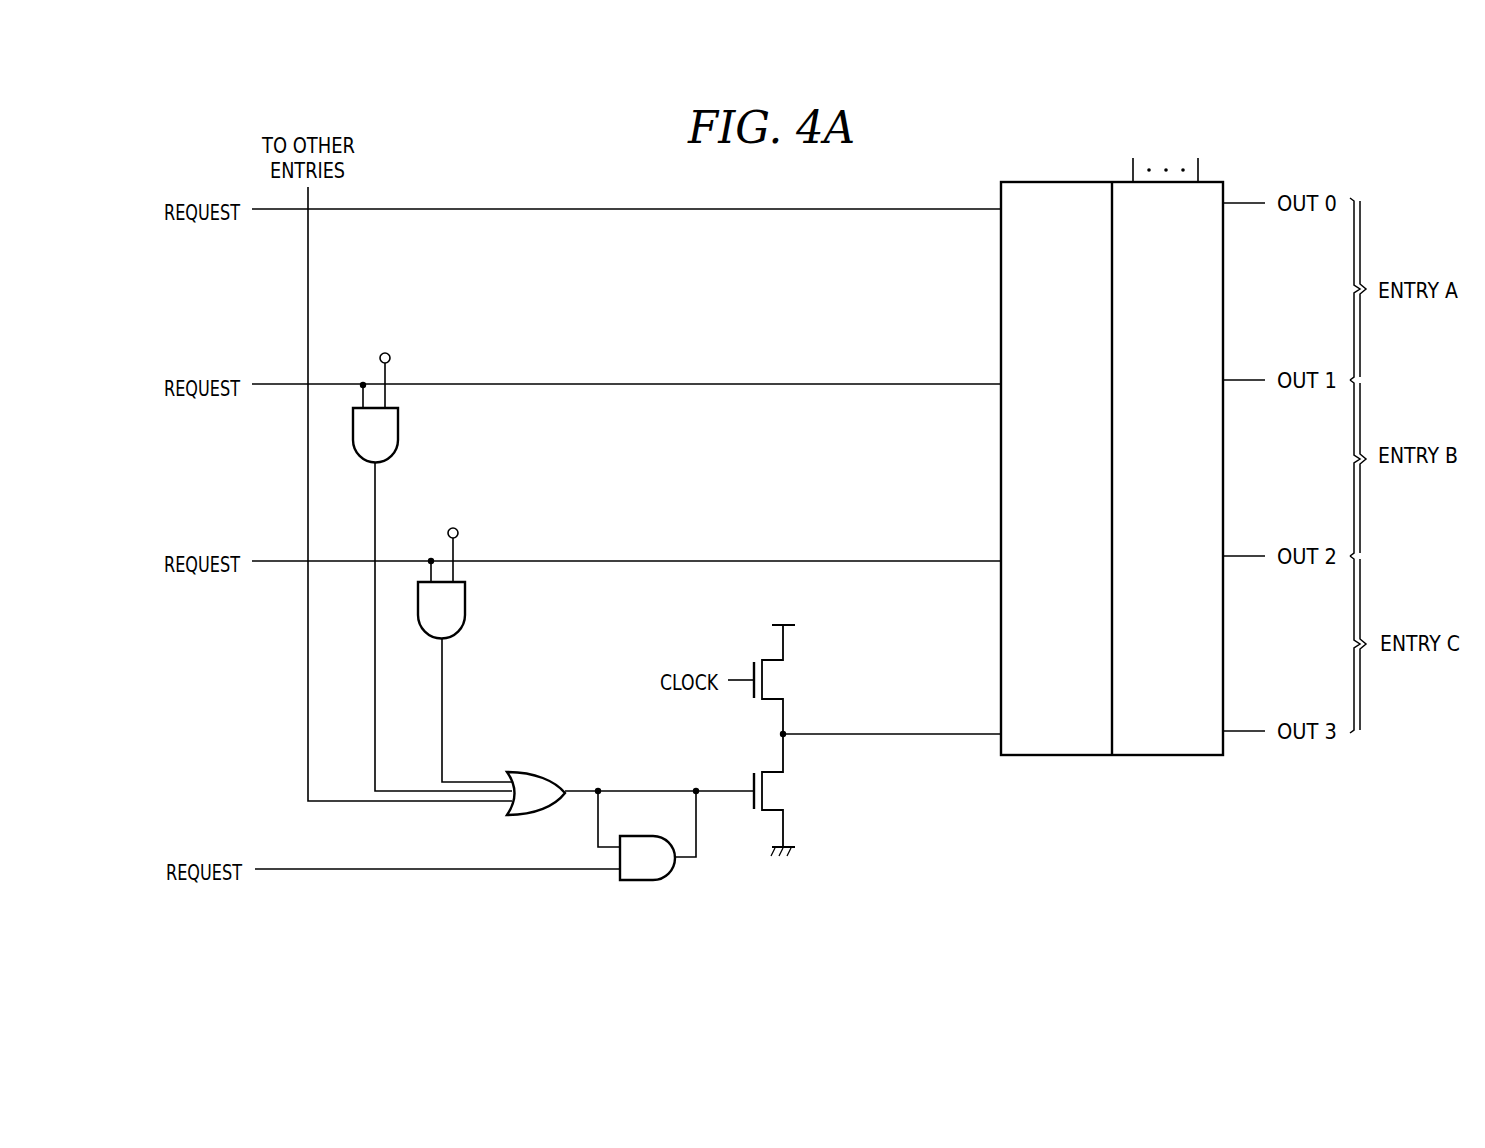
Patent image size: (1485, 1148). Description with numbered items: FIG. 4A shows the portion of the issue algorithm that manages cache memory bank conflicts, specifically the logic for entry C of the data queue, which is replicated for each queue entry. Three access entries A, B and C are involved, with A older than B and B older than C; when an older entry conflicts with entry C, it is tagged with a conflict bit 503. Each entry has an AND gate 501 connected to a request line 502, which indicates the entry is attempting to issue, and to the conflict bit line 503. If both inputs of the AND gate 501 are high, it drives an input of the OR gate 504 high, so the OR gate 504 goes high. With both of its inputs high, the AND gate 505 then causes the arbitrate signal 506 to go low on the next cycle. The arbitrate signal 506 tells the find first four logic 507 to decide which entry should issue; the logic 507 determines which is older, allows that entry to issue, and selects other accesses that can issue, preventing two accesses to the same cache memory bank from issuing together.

The AND gate 501 is at (398, 428).
The request line 502 is at (580, 384).
The conflict bit 503 is at (386, 353).
The OR gate 504 is at (527, 772).
The AND gate 505 is at (650, 880).
The arbitrate signal 506 is at (888, 736).
The find first four logic 507 is at (1168, 755).